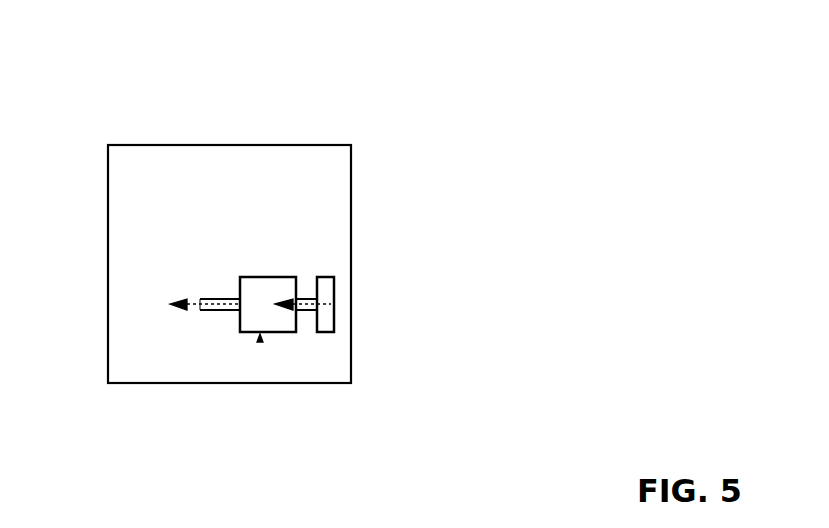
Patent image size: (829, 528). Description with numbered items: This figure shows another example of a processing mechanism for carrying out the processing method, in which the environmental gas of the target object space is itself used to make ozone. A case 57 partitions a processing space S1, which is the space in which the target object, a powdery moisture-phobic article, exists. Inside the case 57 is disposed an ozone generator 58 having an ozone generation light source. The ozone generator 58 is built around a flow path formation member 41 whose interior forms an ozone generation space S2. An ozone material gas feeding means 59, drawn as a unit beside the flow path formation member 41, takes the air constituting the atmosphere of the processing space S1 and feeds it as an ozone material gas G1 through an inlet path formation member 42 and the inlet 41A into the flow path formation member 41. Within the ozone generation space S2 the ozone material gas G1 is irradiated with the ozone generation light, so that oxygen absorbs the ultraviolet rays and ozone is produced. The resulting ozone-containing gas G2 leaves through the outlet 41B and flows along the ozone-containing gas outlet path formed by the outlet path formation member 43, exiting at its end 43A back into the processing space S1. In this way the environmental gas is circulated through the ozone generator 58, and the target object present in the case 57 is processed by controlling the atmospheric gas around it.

The case 57 is at (145, 145).
The flow path formation member 41 is at (263, 277).
The outlet path formation member 43 is at (218, 299).
The inlet path formation member 42 is at (313, 299).
The ozone material gas feeding means 59 is at (328, 283).
The ozone generator 58 is at (260, 340).
The processing space S1 is at (323, 187).
The ozone generation space S2 is at (268, 318).
The ozone material gas G1 is at (305, 310).
The ozone-containing gas G2 is at (185, 311).
The end portion of outlet path formation member 43A is at (200, 298).
The inlet 41A is at (296, 310).
The outlet 41B is at (230, 310).